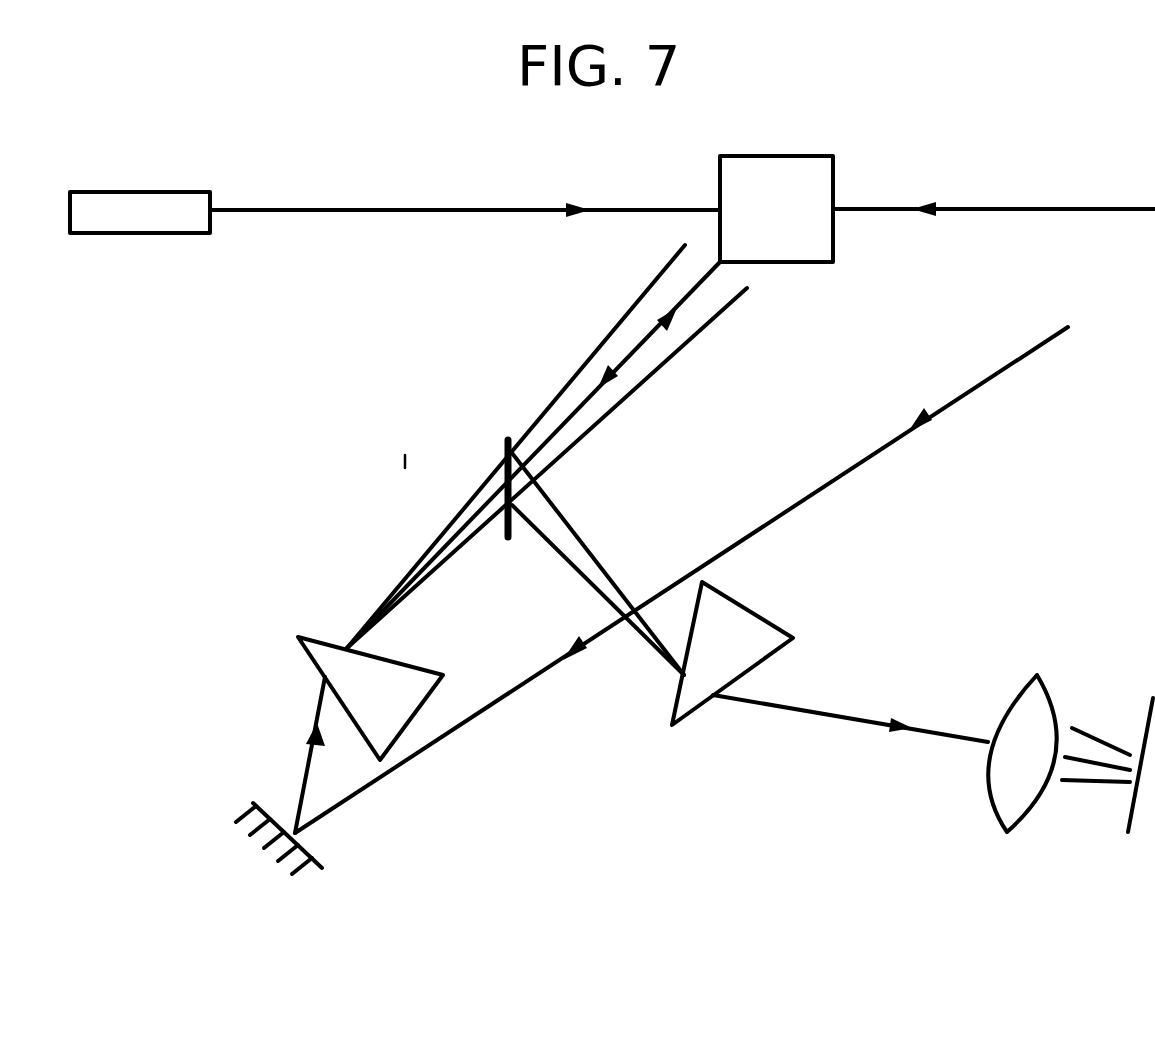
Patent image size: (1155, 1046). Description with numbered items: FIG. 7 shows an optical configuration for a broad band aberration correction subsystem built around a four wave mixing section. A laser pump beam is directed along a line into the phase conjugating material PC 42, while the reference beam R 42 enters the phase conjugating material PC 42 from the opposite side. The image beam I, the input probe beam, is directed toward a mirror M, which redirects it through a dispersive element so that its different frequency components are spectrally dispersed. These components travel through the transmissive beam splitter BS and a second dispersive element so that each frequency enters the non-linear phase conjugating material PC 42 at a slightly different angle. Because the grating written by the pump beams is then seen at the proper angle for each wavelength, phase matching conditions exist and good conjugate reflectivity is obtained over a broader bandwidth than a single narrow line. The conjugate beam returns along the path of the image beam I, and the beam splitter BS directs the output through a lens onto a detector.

The phase conjugating material 42 is at (790, 155).
The phase conjugating material PC is at (756, 132).
The beam splitter BS is at (483, 477).
The mirror M is at (264, 851).
The reference beam R is at (994, 273).
The image beam I is at (984, 426).